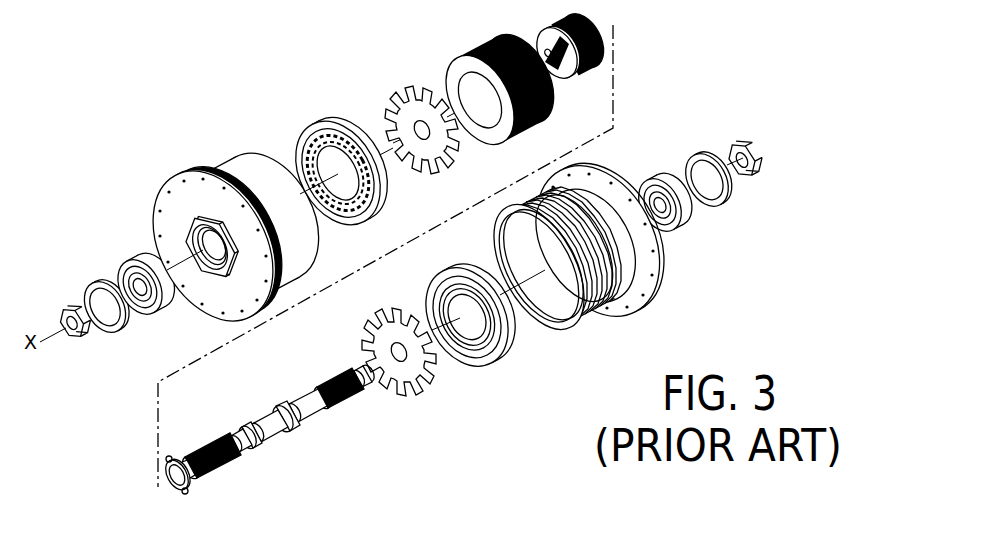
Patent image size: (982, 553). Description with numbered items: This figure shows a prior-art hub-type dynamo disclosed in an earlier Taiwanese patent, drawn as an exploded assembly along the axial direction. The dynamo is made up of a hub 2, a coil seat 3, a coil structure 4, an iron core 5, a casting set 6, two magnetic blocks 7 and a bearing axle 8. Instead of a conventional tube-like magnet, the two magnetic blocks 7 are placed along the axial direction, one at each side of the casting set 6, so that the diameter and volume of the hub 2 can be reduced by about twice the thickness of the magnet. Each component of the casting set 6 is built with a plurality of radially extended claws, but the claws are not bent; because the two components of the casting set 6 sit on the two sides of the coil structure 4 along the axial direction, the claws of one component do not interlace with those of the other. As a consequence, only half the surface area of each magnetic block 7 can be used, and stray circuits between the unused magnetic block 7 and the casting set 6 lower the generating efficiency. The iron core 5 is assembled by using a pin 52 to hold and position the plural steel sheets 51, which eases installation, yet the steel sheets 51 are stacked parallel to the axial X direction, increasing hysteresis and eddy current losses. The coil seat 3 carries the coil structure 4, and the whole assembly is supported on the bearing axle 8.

The hub 2 is at (221, 167).
The coil seat 3 is at (443, 68).
The coil structure 4 is at (471, 39).
The iron core 5 is at (603, 22).
The steel sheets 51 is at (583, 78).
The pin 52 is at (547, 35).
The casting set 6 is at (387, 100).
The magnetic blocks 7 is at (313, 130).
The bearing axle 8 is at (280, 437).